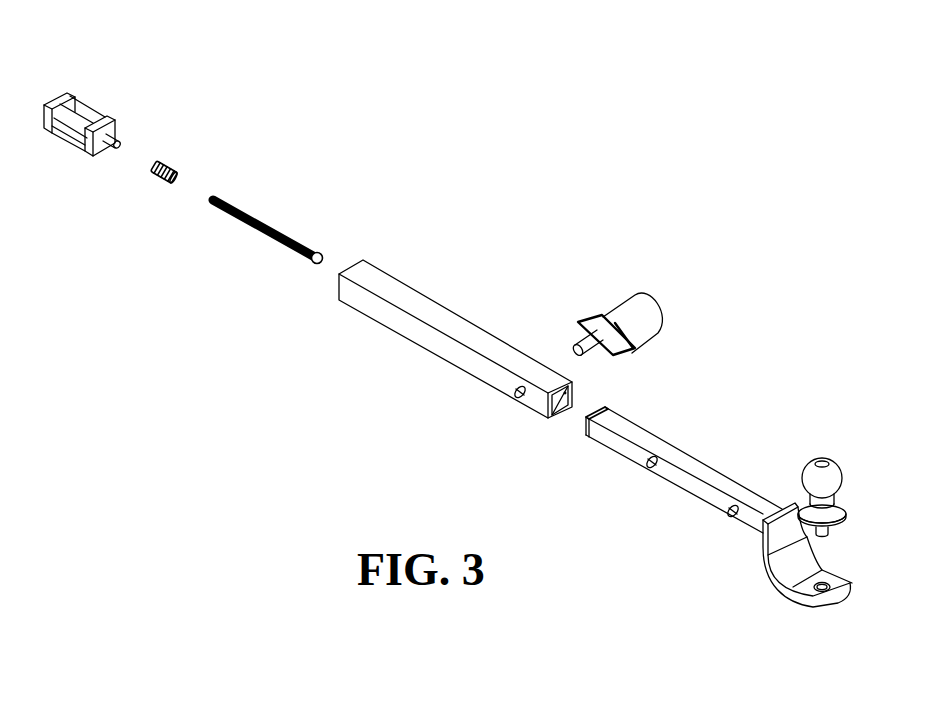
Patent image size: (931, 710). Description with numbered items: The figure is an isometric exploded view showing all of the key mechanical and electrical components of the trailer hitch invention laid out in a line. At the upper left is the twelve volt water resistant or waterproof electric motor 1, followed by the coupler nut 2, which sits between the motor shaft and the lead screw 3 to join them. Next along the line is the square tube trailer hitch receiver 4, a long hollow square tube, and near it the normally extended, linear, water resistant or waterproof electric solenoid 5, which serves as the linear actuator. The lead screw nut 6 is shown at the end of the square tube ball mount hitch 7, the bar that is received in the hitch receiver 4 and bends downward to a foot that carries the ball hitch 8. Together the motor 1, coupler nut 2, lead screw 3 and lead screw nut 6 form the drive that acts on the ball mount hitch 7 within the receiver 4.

The electric motor 1 is at (82, 110).
The coupler nut 2 is at (167, 163).
The lead screw 3 is at (268, 223).
The square tube trailer hitch receiver 4 is at (432, 315).
The electric solenoid 5 is at (633, 310).
The lead screw nut 6 is at (600, 410).
The square tube ball mount hitch 7 is at (707, 473).
The ball hitch 8 is at (822, 464).